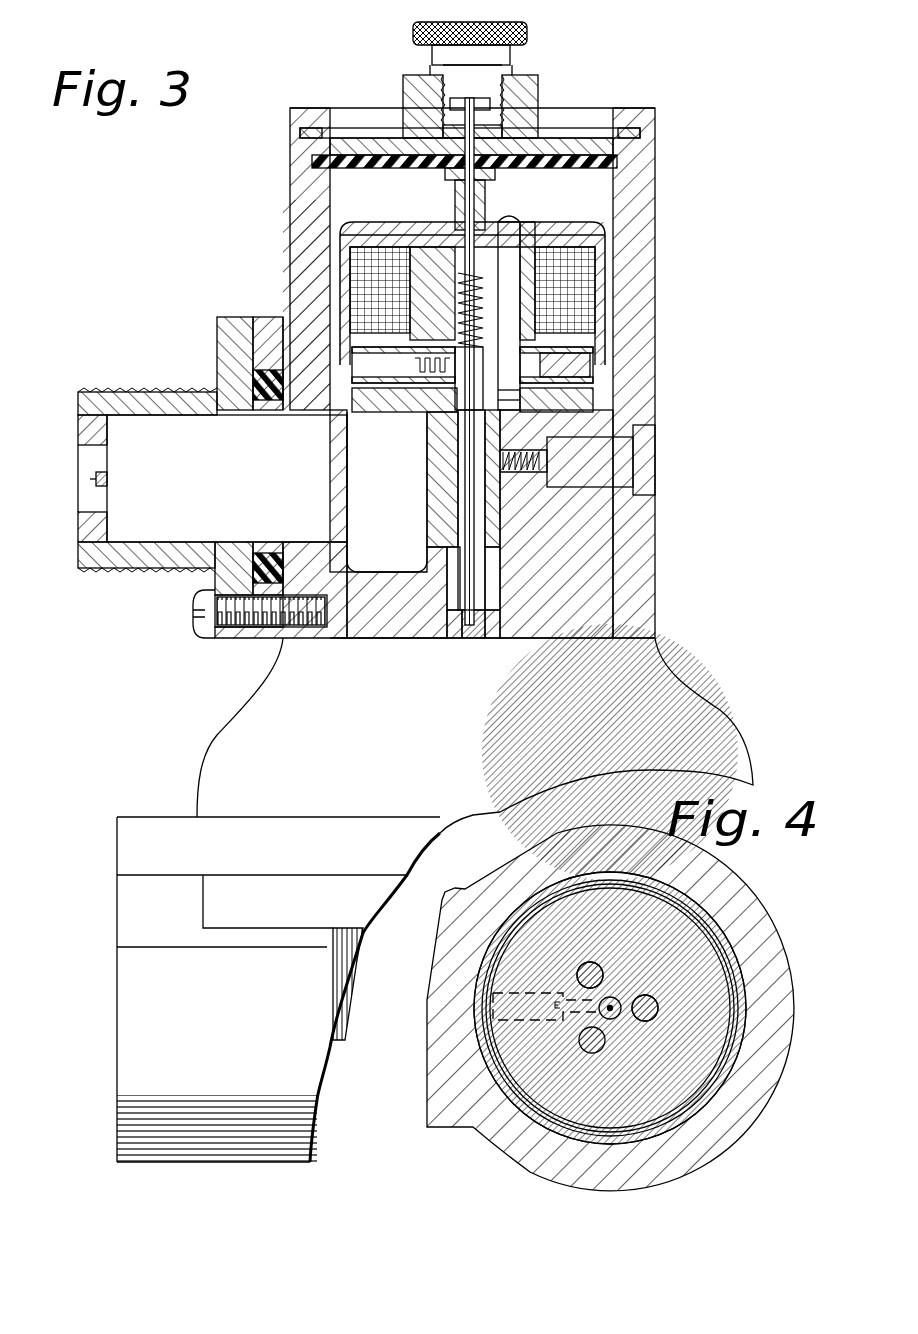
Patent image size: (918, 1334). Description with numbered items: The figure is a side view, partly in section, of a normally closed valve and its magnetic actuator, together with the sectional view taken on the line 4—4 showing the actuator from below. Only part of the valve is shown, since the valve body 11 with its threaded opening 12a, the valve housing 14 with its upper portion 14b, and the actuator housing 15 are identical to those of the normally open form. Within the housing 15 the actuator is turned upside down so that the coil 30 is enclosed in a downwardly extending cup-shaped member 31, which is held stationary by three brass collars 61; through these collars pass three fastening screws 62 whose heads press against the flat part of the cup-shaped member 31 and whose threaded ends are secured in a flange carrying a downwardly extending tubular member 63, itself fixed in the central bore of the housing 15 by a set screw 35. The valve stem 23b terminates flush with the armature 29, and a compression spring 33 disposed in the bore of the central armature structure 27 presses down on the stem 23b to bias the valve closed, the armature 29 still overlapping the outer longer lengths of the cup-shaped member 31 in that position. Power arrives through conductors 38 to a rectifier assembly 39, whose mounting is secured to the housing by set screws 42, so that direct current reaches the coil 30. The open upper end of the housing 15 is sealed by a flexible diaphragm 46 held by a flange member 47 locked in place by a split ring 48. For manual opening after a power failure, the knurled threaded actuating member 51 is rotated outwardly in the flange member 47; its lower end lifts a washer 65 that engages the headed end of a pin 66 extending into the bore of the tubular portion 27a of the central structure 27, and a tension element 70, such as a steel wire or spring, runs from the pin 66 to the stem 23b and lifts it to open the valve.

In FIG. 3, the valve body 11 is at (360, 930).
In FIG. 3, the threaded opening 12a is at (117, 1007).
In FIG. 3, the valve housing 14 is at (237, 730).
In FIG. 3, the bracket top portion 14b is at (135, 826).
In FIG. 3, the actuator housing 15 is at (645, 414).
In FIG. 4, the actuator housing 15 is at (748, 905).
In FIG. 3, the valve stem 23b is at (470, 518).
In FIG. 4, the valve stem 23b is at (610, 1020).
In FIG. 3, the central armature structure 27 is at (420, 235).
In FIG. 3, the tubular portion 27a is at (485, 196).
In FIG. 3, the armature 29 is at (596, 372).
In FIG. 4, the armature 29 is at (610, 1008).
In FIG. 3, the coil 30 is at (600, 262).
In FIG. 3, the cup-shaped member 31 is at (575, 280).
In FIG. 4, the cup-shaped member 31 is at (745, 1005).
In FIG. 3, the compression spring 33 is at (468, 298).
In FIG. 3, the set screw 35 is at (547, 462).
In FIG. 3, the conductors 38 is at (94, 478).
In FIG. 3, the rectifier assembly 39 is at (212, 478).
In FIG. 3, the set screws 42 is at (203, 598).
In FIG. 3, the flexible diaphragm 46 is at (583, 160).
In FIG. 3, the flange member 47 is at (538, 85).
In FIG. 3, the split ring 48 is at (625, 133).
In FIG. 3, the threaded actuating member 51 is at (527, 33).
In FIG. 3, the collars 61 is at (565, 365).
In FIG. 4, the collars 61 is at (578, 970).
In FIG. 3, the fastening screws 62 is at (510, 232).
In FIG. 4, the fastening screws 62 is at (592, 962).
In FIG. 3, the tubular member 63 is at (448, 472).
In FIG. 3, the washer 65 is at (455, 128).
In FIG. 3, the pin 66 is at (470, 93).
In FIG. 3, the tension element 70 is at (442, 232).
In FIG. 4, the tension element 70 is at (611, 1005).
In FIG. 3, the section line 4- 4 is at (285, 343).